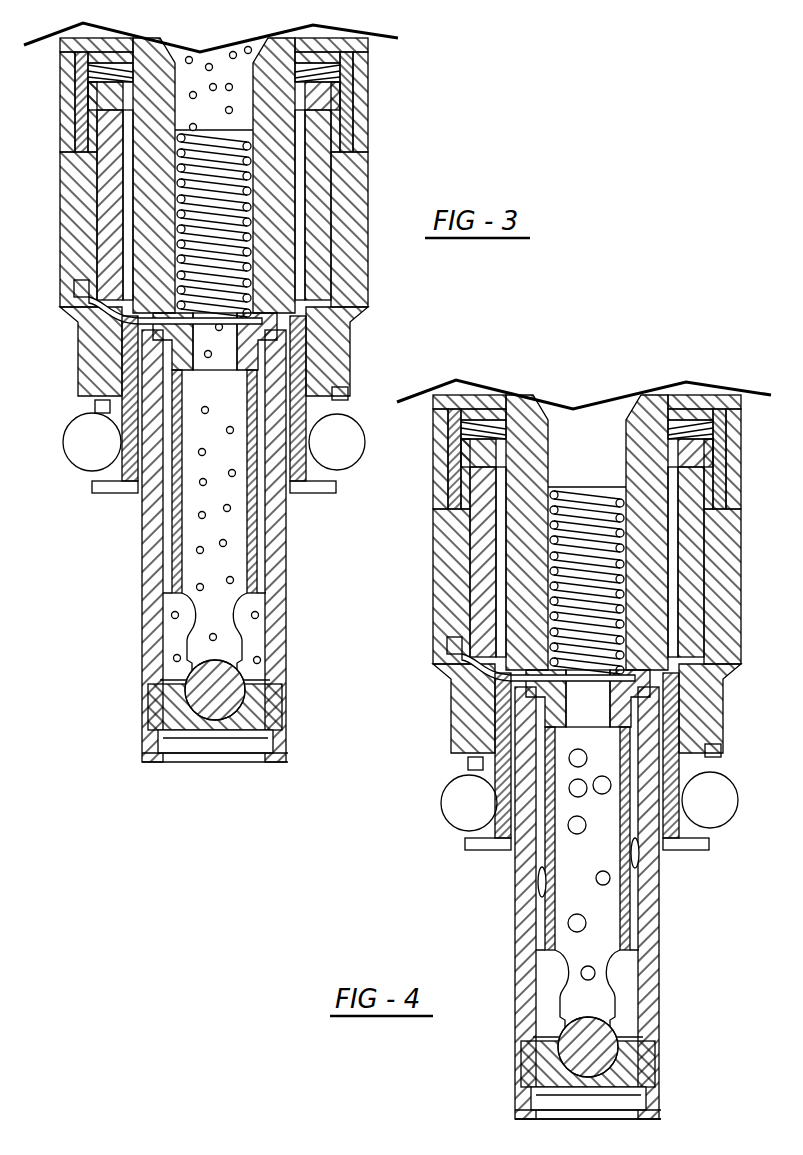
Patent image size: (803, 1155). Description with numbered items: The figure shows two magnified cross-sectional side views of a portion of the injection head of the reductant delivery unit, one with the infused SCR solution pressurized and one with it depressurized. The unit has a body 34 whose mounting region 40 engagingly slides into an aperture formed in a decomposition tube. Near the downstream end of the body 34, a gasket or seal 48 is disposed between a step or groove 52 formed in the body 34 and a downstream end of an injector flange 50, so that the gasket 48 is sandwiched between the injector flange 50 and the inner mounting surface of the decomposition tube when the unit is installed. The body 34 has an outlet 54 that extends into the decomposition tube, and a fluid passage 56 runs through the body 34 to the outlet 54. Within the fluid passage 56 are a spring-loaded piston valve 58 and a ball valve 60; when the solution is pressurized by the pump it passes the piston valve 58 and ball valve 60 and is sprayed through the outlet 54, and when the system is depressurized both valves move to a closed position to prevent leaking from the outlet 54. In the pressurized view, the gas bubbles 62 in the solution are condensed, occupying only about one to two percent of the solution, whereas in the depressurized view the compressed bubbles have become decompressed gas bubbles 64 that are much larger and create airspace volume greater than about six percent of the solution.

In FIG. 3, the body 34 is at (350, 187).
In FIG. 4, the body 34 is at (567, 749).
In FIG. 4, the mounting region 40 is at (761, 768).
In FIG. 3, the gasket or seal 48 is at (343, 452).
In FIG. 4, the gasket or seal 48 is at (550, 802).
In FIG. 3, the injector flange 50 is at (320, 493).
In FIG. 4, the injector flange 50 is at (563, 785).
In FIG. 3, the step or groove 52 is at (340, 392).
In FIG. 4, the step or groove 52 is at (549, 751).
In FIG. 4, the outlet 54 is at (556, 1136).
In FIG. 4, the fluid passage 56 is at (649, 843).
In FIG. 3, the spring-loaded piston valve 58 is at (262, 320).
In FIG. 4, the spring-loaded piston valve 58 is at (616, 615).
In FIG. 3, the ball valve 60 is at (215, 693).
In FIG. 4, the ball valve 60 is at (652, 1047).
In FIG. 3, the gas bubbles 62 is at (198, 550).
In FIG. 4, the decompressed gas bubbles 64 is at (668, 925).